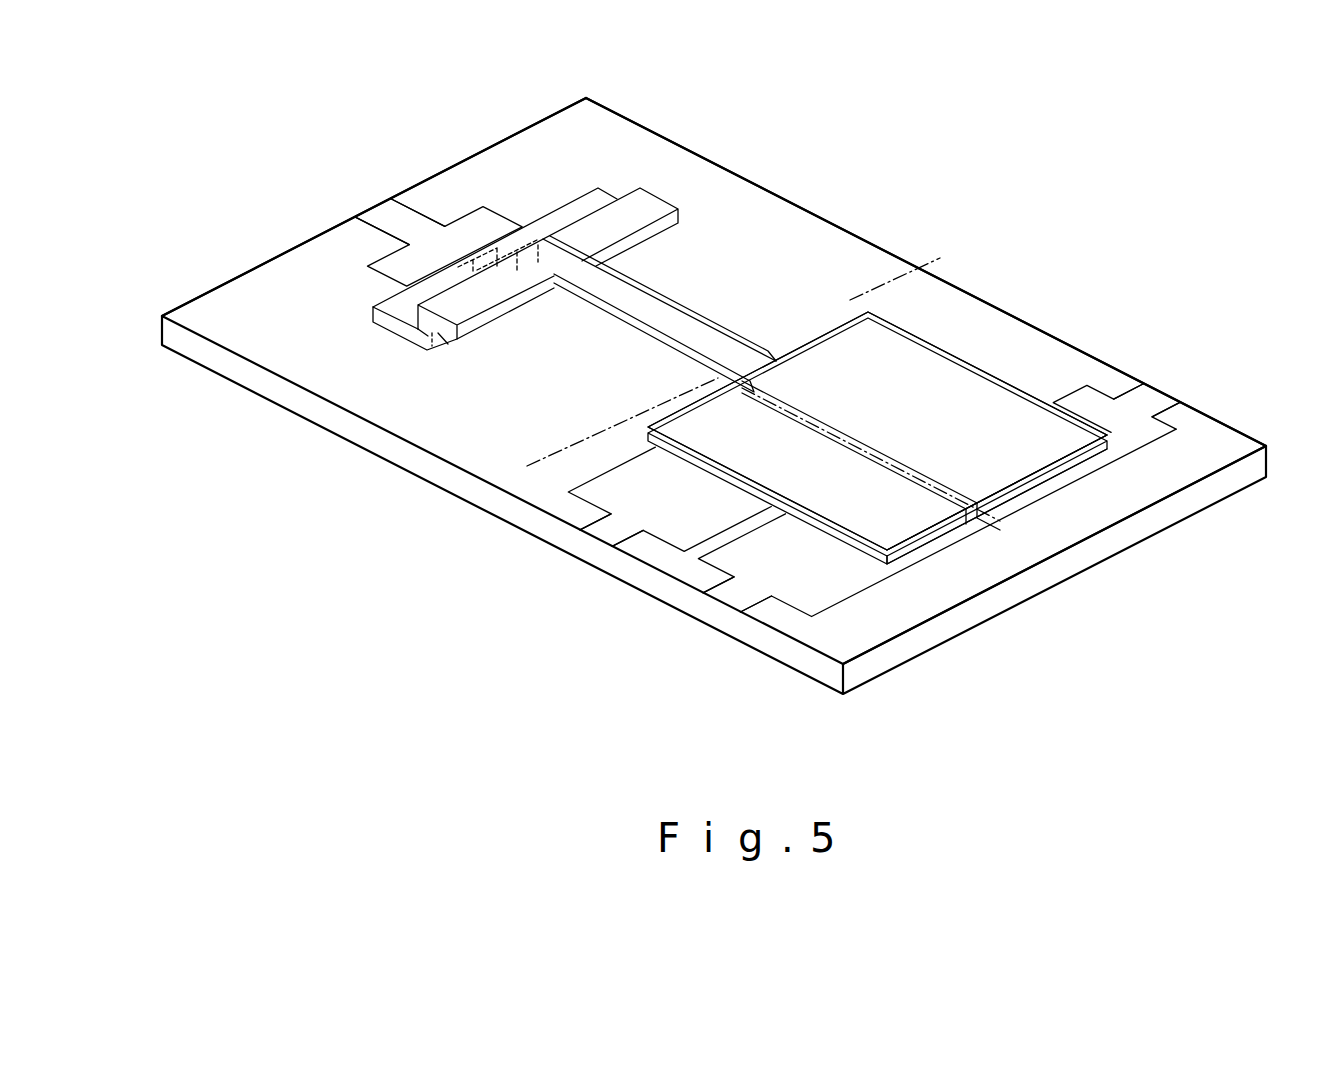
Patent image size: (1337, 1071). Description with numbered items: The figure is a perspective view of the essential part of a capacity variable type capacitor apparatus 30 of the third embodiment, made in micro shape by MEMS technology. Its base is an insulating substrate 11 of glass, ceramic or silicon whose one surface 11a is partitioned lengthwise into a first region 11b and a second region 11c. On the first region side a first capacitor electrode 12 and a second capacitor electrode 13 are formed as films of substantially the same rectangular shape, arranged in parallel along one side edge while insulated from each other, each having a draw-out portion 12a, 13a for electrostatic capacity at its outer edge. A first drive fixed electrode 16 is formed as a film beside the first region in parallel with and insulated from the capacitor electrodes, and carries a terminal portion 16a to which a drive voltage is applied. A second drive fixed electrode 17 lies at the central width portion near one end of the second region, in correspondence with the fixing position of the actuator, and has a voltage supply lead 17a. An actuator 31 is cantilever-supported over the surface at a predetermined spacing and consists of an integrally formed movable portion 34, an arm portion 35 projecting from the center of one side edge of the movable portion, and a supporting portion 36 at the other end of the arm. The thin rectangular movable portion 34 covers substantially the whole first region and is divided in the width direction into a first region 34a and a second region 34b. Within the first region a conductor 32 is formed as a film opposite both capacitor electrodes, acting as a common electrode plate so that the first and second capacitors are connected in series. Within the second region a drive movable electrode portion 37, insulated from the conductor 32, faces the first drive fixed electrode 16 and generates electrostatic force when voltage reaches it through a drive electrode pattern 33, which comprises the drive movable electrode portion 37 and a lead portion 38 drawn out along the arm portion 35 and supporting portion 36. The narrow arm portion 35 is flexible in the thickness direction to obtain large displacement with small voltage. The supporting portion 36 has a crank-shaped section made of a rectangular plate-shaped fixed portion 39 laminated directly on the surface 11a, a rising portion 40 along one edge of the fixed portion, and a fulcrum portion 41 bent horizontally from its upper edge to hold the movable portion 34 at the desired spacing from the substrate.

The insulating substrate 11 is at (470, 172).
The one surface 11a is at (927, 598).
The first region 11b is at (1068, 372).
The second region 11c is at (645, 155).
The first capacitor electrode 12 is at (798, 582).
The draw-out portion 12a is at (737, 595).
The second capacitor electrode 13 is at (662, 515).
The draw-out portion 13a is at (605, 520).
The first drive fixed electrode 16 is at (1130, 433).
The terminal portion 16a is at (1147, 412).
The second drive fixed electrode 17 is at (458, 232).
The voltage supply lead 17a is at (385, 215).
The capacitor apparatus 30 is at (468, 301).
The actuator 31 is at (537, 185).
The conductor 32 is at (923, 530).
The drive electrode pattern 33 is at (1002, 378).
The movable portion 34 is at (957, 380).
The first region 34a is at (1037, 532).
The second region 34b is at (1097, 463).
The arm portion 35 is at (705, 320).
The supporting portion 36 is at (468, 394).
The drive movable electrode portion 37 is at (1040, 470).
The lead portion 38 is at (653, 315).
The fixed portion 39 is at (385, 325).
The rising portion 40 is at (427, 332).
The fulcrum portion 41 is at (442, 332).